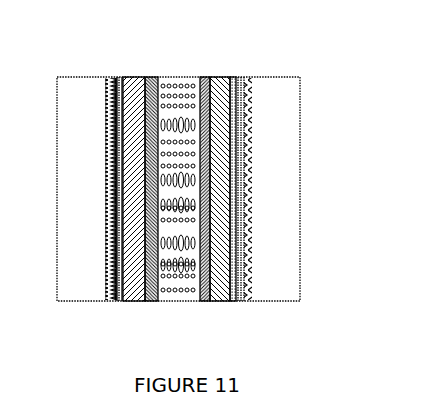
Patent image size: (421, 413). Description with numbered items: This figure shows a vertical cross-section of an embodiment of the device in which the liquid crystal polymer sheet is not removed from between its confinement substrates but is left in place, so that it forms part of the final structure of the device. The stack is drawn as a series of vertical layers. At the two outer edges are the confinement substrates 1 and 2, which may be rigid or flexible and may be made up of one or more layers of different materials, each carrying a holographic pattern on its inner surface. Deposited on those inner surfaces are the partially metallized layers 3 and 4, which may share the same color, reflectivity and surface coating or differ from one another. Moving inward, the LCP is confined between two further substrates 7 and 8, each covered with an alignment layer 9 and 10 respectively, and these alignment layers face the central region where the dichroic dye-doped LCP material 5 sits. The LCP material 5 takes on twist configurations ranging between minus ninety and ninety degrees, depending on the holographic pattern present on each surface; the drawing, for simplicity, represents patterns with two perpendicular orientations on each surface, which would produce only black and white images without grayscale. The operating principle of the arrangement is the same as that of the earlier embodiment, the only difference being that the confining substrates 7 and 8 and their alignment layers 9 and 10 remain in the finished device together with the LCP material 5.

The confinement substrate 1 is at (90, 76).
The confinement substrate 2 is at (277, 76).
The partially metallized layer 3 is at (114, 76).
The partially metallized layer 4 is at (245, 76).
The dichroic dye-doped LCP material 5 is at (181, 76).
The substrate 7 is at (134, 76).
The substrate 8 is at (221, 76).
The alignment layer 9 is at (153, 76).
The alignment layer 10 is at (204, 76).